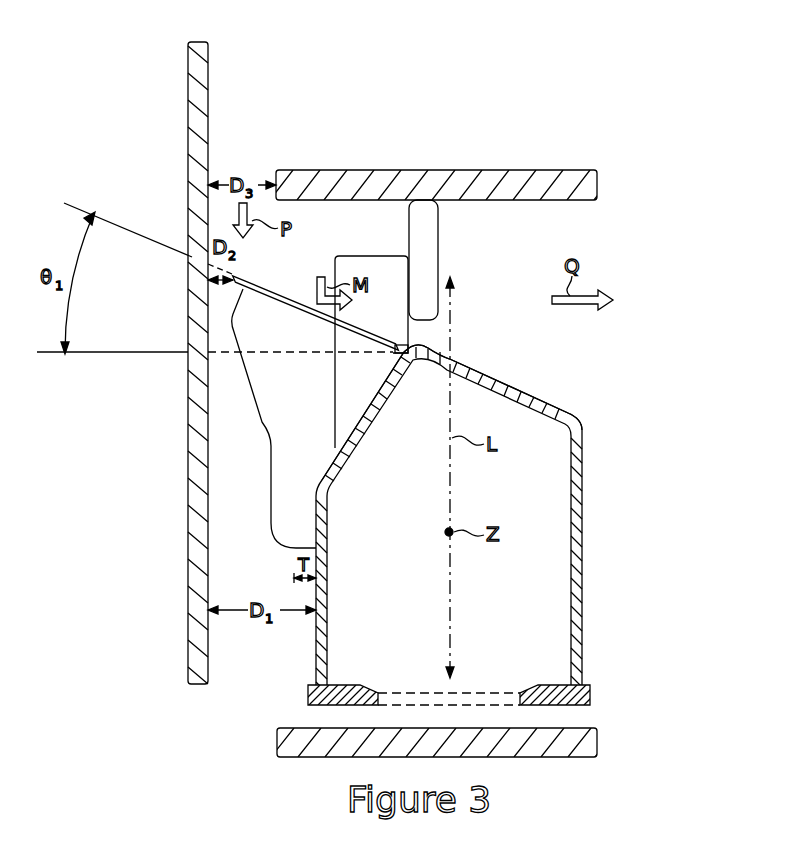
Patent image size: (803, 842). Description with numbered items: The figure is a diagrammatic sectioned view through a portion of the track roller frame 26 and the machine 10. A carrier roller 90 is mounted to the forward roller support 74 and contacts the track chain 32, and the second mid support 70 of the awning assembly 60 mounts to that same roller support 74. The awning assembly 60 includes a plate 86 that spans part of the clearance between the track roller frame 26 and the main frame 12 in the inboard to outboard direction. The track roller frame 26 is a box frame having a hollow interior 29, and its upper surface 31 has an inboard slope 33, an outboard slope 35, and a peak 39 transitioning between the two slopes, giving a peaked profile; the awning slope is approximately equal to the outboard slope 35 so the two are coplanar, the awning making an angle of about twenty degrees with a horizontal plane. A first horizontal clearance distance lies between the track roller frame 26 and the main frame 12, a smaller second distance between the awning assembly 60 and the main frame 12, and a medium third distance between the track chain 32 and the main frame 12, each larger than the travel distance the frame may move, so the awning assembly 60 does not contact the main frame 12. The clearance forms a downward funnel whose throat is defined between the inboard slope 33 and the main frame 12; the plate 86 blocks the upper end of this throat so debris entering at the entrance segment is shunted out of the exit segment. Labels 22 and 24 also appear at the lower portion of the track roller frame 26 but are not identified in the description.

The machine 10 is at (652, 268).
The main frame 12 is at (188, 92).
The first mounting flange 22 is at (297, 704).
The second mounting flange 24 is at (602, 716).
The track roller frame 26 is at (585, 447).
The hollow interior 29 is at (540, 556).
The upper surface 31 is at (578, 403).
The track chain 32 is at (557, 170).
The inboard slope 33 is at (360, 412).
The outboard slope 35 is at (522, 384).
The peak 39 is at (430, 348).
The awning assembly 60 is at (289, 290).
The second mid support 70 is at (272, 470).
The forward roller support 74 is at (370, 256).
The plate 86 is at (393, 346).
The carrier roller 90 is at (440, 218).